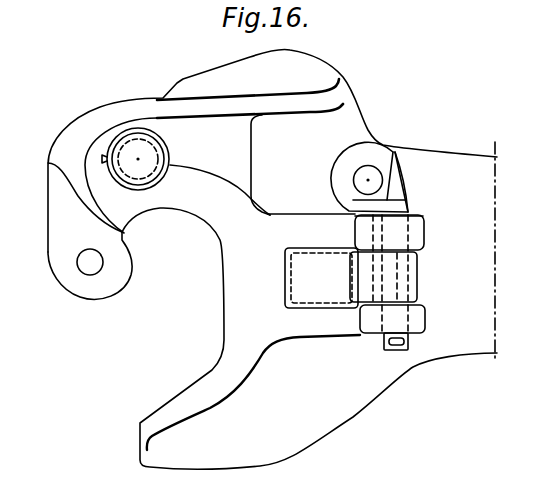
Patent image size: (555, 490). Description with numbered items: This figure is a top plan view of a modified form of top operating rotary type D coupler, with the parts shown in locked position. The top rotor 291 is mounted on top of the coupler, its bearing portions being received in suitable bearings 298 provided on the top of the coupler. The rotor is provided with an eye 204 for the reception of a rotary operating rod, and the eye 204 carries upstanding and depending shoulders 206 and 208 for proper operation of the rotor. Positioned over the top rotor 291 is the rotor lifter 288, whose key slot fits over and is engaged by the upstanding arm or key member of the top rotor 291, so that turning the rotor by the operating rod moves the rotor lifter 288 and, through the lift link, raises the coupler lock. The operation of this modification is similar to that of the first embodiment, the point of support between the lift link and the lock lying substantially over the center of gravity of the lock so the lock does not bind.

The eye 204 is at (379, 149).
The upstanding shoulder 206 is at (400, 169).
The depending shoulder 208 is at (343, 174).
The top rotor 291 is at (400, 198).
The rotor lifter 288 is at (316, 296).
The bearings 298 is at (417, 323).